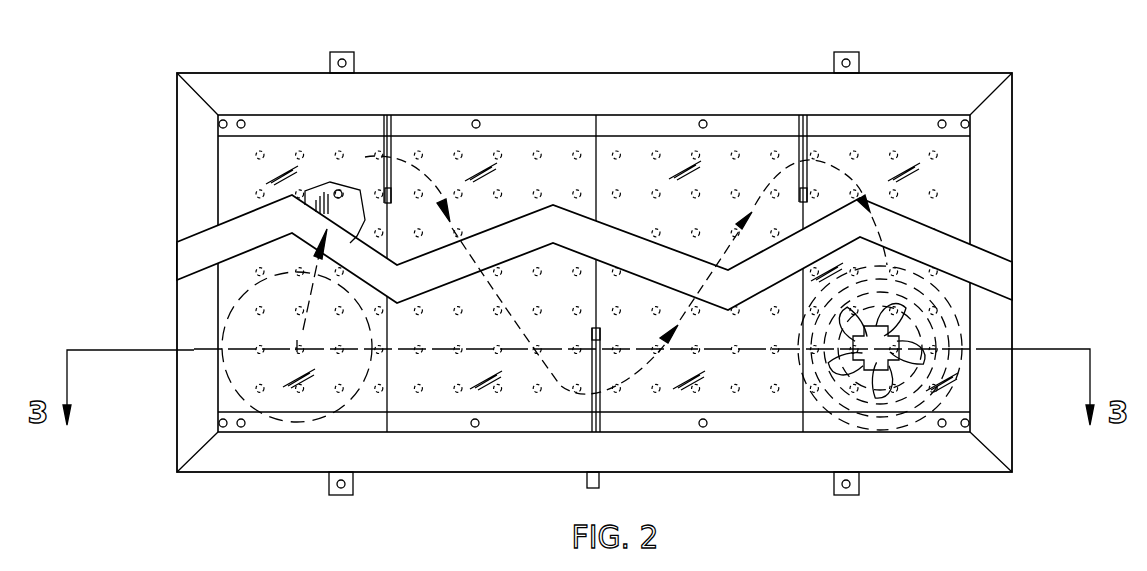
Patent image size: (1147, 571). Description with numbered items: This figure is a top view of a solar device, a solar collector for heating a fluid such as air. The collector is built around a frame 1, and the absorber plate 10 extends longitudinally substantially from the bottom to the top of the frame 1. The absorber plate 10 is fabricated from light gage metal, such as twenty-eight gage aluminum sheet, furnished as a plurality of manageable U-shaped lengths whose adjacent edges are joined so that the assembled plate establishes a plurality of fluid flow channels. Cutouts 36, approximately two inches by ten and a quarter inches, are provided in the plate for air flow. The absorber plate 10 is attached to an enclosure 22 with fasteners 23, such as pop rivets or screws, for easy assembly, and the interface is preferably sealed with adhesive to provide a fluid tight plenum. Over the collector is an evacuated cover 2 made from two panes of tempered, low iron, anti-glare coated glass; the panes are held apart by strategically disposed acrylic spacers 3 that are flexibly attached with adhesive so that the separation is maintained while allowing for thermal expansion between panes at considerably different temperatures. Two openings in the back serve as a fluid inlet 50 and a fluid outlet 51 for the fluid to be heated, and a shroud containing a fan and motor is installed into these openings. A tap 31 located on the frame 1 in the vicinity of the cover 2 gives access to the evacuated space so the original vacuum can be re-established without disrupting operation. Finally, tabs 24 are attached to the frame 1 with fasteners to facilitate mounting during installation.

The frame 1 is at (980, 73).
The evacuated cover 2 is at (948, 219).
The acrylic spacers 3 is at (935, 192).
The absorber plate 10 is at (262, 208).
The enclosure 22 is at (350, 127).
The fasteners 23 is at (241, 119).
The tabs 24 is at (330, 53).
The tap 31 is at (585, 490).
The cutouts 36 is at (393, 143).
The fluid inlet 50 is at (273, 337).
The fluid outlet 51 is at (940, 316).